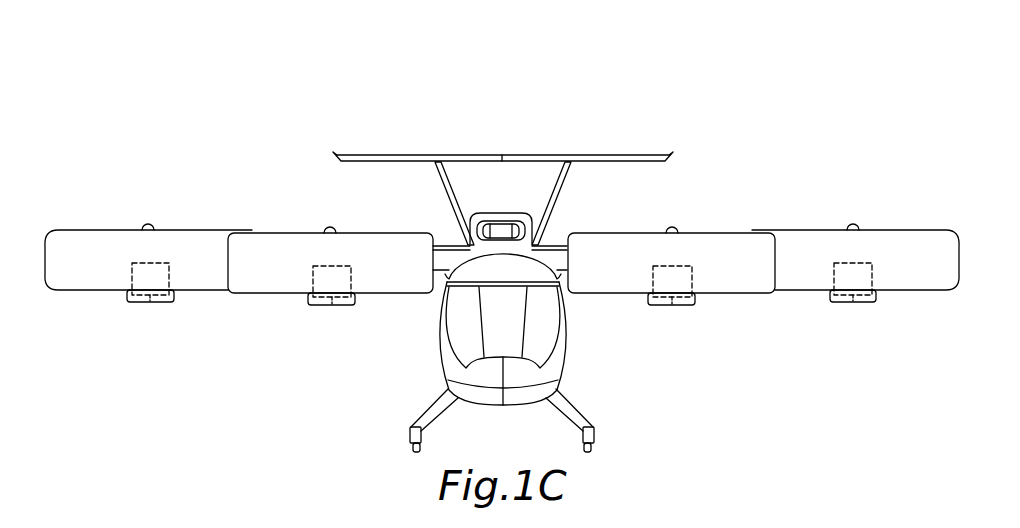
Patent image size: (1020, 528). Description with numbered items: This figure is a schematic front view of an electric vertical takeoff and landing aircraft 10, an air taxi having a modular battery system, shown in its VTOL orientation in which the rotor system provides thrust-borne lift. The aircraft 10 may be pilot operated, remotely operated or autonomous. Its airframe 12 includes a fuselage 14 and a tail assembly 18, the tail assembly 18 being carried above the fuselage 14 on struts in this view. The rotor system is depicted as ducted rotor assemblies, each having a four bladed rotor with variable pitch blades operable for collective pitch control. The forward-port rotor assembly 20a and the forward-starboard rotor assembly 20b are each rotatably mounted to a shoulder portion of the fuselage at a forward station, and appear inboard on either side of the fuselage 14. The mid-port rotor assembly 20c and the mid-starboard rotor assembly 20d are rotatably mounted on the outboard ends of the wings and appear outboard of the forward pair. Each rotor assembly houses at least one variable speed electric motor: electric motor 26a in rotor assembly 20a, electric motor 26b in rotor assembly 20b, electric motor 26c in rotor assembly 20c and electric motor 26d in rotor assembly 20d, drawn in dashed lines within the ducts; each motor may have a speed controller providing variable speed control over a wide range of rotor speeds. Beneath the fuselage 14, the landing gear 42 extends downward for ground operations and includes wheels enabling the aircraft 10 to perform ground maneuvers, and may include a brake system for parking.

The aircraft 10 is at (575, 110).
The airframe 12 is at (556, 375).
The fuselage 14 is at (558, 357).
The tail assembly 18 is at (512, 156).
The forward-port rotor assembly 20a is at (713, 240).
The forward-starboard rotor assembly 20b is at (283, 240).
The mid-port rotor assembly 20c is at (893, 232).
The mid-starboard rotor assembly 20d is at (101, 229).
The variable speed electric motor 26a is at (674, 308).
The variable speed electric motor 26b is at (327, 308).
The variable speed electric motor 26c is at (855, 305).
The variable speed electric motor 26d is at (146, 305).
The landing gear 42 is at (424, 412).